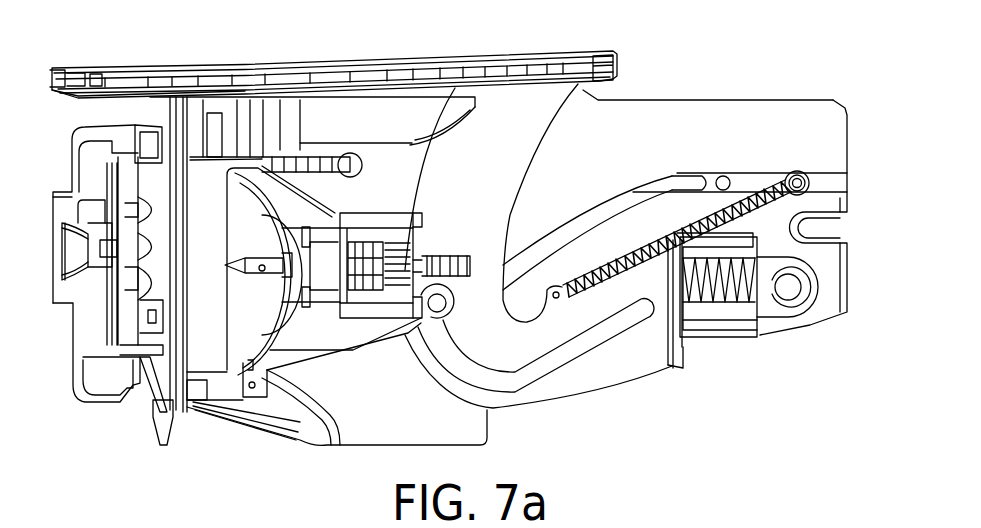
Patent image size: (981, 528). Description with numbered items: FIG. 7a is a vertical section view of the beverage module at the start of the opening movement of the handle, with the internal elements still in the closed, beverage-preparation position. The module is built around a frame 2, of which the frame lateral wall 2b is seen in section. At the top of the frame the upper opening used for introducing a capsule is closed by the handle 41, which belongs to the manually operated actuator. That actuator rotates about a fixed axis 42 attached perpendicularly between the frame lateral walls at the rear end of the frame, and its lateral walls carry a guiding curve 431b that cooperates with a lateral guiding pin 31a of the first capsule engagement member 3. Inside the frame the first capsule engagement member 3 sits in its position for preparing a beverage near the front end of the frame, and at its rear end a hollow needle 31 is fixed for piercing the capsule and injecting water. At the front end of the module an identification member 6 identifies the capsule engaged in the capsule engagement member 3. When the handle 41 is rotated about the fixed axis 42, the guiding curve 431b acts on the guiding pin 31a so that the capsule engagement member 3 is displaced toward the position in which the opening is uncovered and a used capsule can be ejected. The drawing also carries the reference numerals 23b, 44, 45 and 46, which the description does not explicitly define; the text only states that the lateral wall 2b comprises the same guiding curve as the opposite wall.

The frame 2 is at (233, 117).
The handle 41 is at (400, 56).
The lever arm 23b is at (643, 185).
The threaded rod 44 is at (708, 240).
The spring housing 45 is at (727, 253).
The frame lateral wall 2b is at (848, 200).
The identification member 6 is at (150, 280).
The hollow needle 31 is at (270, 275).
The first capsule engagement member 3 is at (223, 373).
The guiding pin 31a is at (445, 305).
The fixed axis 42 is at (790, 290).
The spring 46 is at (733, 300).
The guiding curve 431b is at (530, 380).